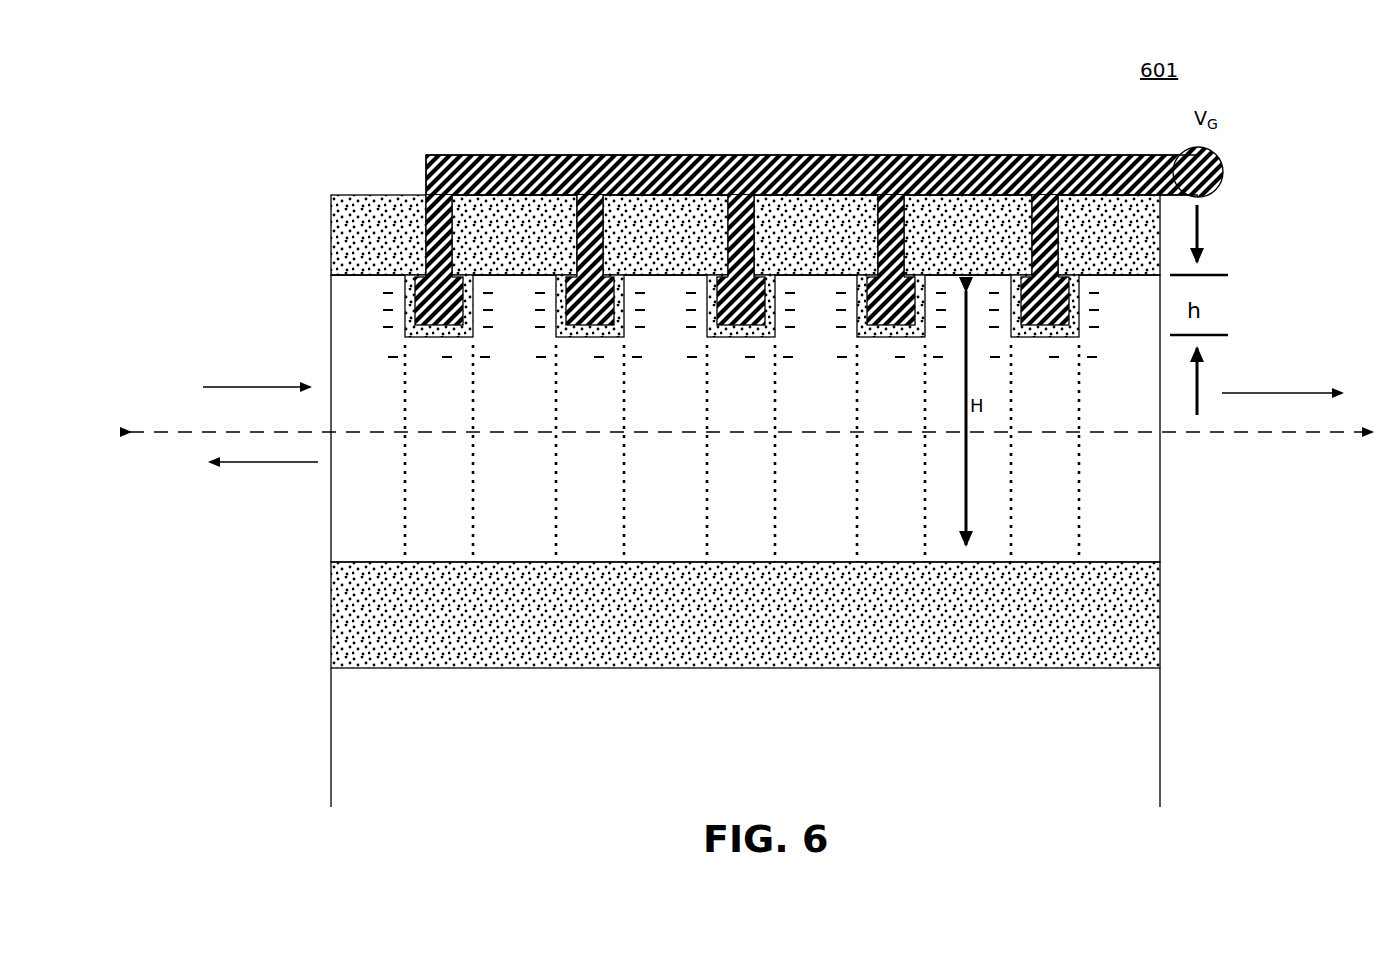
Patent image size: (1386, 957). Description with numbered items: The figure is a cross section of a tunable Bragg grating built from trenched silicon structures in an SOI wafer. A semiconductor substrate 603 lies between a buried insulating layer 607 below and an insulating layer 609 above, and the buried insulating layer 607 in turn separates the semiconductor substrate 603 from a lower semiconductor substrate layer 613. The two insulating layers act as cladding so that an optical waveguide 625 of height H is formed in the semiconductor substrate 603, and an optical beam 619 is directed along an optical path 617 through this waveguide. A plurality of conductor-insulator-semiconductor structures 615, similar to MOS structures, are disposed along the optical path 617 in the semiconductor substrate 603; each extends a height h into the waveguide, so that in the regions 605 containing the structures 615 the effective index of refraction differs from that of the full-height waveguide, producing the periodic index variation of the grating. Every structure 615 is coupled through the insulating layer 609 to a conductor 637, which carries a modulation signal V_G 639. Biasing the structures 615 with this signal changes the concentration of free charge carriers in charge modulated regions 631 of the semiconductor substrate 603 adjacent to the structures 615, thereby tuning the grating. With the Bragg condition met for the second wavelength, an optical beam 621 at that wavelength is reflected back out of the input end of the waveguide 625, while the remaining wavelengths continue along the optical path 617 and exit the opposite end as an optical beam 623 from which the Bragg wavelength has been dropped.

The semiconductor substrate 603 is at (1160, 532).
The regions 605 is at (747, 540).
The buried insulating layer 607 is at (1153, 616).
The insulating layer 609 is at (332, 240).
The semiconductor substrate layer 613 is at (1152, 756).
The conductor-insulator-semiconductor structures 615 is at (404, 338).
The optical path 617 is at (166, 418).
The optical beam 619 is at (253, 346).
The optical beam 621 is at (238, 490).
The optical beam 623 is at (1290, 352).
The optical waveguide 625 is at (1206, 455).
The charge modulated regions 631 is at (416, 370).
The conductor 637 is at (695, 155).
The modulation signal V_G 639 is at (1255, 108).